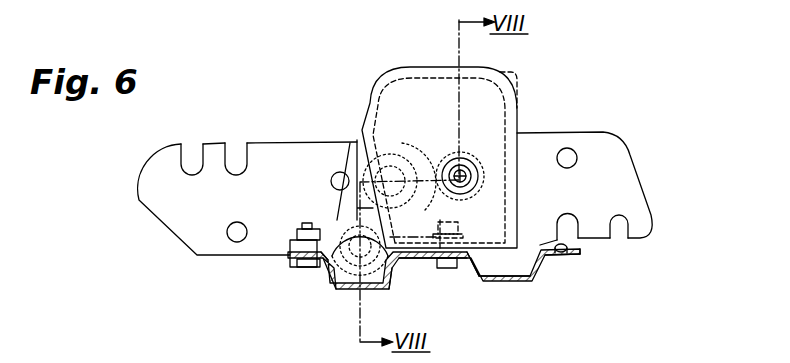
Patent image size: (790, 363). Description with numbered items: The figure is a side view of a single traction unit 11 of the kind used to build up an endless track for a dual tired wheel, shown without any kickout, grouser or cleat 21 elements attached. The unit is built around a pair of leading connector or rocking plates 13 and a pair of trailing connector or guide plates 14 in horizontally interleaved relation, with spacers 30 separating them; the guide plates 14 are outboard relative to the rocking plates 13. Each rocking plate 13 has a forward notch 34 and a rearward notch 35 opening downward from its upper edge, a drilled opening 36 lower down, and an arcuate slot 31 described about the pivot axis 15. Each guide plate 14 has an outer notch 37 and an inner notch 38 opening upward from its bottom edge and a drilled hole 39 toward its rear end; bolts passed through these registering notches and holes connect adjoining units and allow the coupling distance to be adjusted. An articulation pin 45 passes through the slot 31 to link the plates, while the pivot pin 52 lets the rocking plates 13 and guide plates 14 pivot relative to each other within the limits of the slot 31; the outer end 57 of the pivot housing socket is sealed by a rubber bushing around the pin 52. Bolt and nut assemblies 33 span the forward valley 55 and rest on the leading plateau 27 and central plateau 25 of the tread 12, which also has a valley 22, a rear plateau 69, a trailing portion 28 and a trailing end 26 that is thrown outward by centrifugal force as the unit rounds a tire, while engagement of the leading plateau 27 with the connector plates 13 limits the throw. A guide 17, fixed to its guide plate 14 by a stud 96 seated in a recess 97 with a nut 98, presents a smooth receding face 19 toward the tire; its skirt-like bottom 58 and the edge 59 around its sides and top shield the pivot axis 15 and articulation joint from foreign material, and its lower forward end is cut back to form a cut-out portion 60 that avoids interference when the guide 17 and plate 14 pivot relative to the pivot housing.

The traction unit 11 is at (290, 169).
The tread 12 is at (528, 283).
The leading connector plate (rocking plate) 13 is at (143, 172).
The trailing connector plate (guide plate) 14 is at (626, 160).
The pivot axis 15 is at (334, 288).
The guide 17 is at (370, 103).
The receding face 19 is at (439, 160).
The cleat 21 is at (406, 234).
The valley 22 is at (504, 283).
The central plateau 25 is at (434, 260).
The trailing end 26 is at (581, 253).
The leading plateau 27 is at (291, 262).
The trailing portion 28 is at (554, 257).
The spacer 30 is at (379, 160).
The arcuate slot 31 is at (331, 181).
The bolt and nut assembly 33 is at (299, 231).
The forward notch 34 is at (191, 160).
The rearward notch 35 is at (236, 160).
The drilled opening 36 is at (228, 233).
The outer notch 37 is at (632, 236).
The inner notch 38 is at (568, 226).
The drilled hole 39 is at (574, 151).
The articulation pin 45 is at (415, 188).
The pivot pin 52 is at (367, 290).
The forward valley 55 is at (390, 290).
The outer end of socket 57 is at (324, 274).
The bottom of guide (skirt) 58 is at (477, 268).
The edge of guide 59 is at (507, 95).
The cut-out portion 60 is at (384, 213).
The rear plateau 69 is at (565, 254).
The stud 96 is at (469, 170).
The recess 97 is at (464, 163).
The nut 98 is at (456, 160).